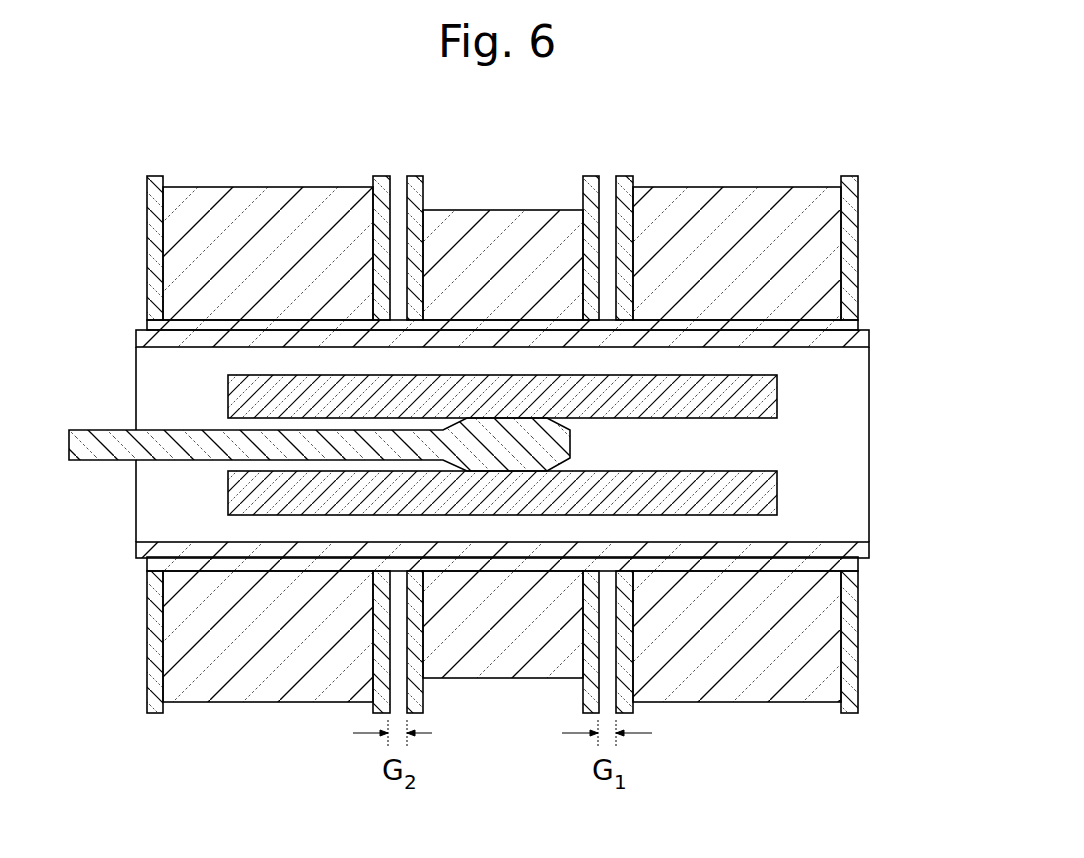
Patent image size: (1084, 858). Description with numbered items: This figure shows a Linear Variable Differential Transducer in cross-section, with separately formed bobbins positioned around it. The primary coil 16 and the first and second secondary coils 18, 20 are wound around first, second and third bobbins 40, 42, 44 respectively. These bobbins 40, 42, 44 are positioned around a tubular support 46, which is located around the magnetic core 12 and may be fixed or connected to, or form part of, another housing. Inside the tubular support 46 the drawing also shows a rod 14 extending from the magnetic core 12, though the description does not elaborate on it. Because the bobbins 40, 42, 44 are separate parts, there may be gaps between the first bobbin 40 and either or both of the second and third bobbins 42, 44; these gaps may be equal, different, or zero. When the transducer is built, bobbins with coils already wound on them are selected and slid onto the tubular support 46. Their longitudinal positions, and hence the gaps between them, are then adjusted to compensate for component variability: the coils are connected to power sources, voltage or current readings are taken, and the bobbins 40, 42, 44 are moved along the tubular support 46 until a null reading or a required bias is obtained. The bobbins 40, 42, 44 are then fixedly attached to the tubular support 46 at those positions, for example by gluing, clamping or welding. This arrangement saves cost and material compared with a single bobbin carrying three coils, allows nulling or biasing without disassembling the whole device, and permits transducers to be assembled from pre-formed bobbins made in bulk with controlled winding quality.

The magnetic core 12 is at (136, 338).
The rod 14 is at (100, 462).
The primary coil 16 is at (488, 213).
The first secondary coil 18 is at (720, 200).
The second secondary coil 20 is at (257, 192).
The first bobbin 40 is at (590, 190).
The second bobbin 42 is at (852, 242).
The third bobbin 44 is at (150, 242).
The tubular support 46 is at (840, 492).